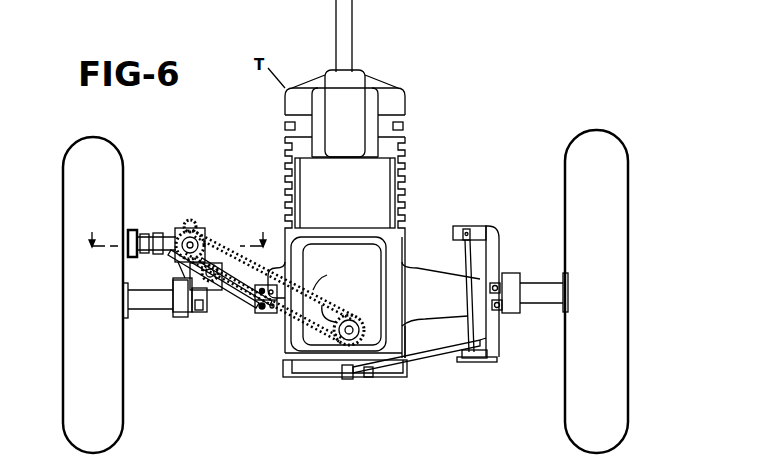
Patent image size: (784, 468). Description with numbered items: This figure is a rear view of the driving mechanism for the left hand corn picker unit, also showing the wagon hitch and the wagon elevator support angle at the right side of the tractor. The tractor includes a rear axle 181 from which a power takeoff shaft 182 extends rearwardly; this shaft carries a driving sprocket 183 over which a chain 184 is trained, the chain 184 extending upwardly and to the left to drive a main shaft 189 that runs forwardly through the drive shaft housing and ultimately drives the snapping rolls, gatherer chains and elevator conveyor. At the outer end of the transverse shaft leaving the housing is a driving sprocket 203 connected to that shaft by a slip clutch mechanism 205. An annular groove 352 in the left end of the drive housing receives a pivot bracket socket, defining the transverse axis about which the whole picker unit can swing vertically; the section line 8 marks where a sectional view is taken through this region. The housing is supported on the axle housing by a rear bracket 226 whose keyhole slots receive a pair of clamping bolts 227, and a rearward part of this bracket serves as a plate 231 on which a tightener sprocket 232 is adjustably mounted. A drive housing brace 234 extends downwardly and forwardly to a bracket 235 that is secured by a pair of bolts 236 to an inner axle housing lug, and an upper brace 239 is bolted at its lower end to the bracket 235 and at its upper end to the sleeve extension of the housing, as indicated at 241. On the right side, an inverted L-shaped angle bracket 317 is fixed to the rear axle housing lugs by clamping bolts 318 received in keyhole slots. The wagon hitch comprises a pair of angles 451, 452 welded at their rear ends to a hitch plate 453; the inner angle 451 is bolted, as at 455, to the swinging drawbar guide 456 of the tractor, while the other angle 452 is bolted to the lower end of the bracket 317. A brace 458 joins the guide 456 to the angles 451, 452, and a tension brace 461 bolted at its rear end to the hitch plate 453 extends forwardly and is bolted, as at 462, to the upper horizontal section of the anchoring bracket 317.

The section line 8- 8 is at (176, 235).
The rear axle 181 is at (433, 262).
The power takeoff shaft 182 is at (366, 303).
The driving sprocket 183 is at (322, 305).
The chain 184 is at (315, 296).
The main shaft 189 is at (193, 233).
The driving sprocket 203 is at (134, 230).
The slip clutch mechanism 205 is at (145, 230).
The rear bracket 226 is at (207, 292).
The clamping bolts 227 is at (207, 312).
The plate 231 is at (210, 290).
The tightener sprocket 232 is at (220, 290).
The drive housing brace 234 is at (237, 298).
The bracket 235 is at (261, 313).
The bolts 236 is at (277, 313).
The upper brace 239 is at (232, 252).
The bolted connection 241 is at (190, 220).
The inverted L-shaped angle bracket 317 is at (495, 250).
The clamping bolts 318 is at (498, 301).
The annular groove 352 is at (156, 232).
The inner angle 451 is at (452, 346).
The angle 452 is at (488, 338).
The hitch plate 453 is at (488, 359).
The bolt 455 is at (346, 379).
The swinging drawbar guide 456 is at (367, 377).
The brace 458 is at (363, 378).
The tension brace 461 is at (468, 295).
The bolt 462 is at (467, 228).